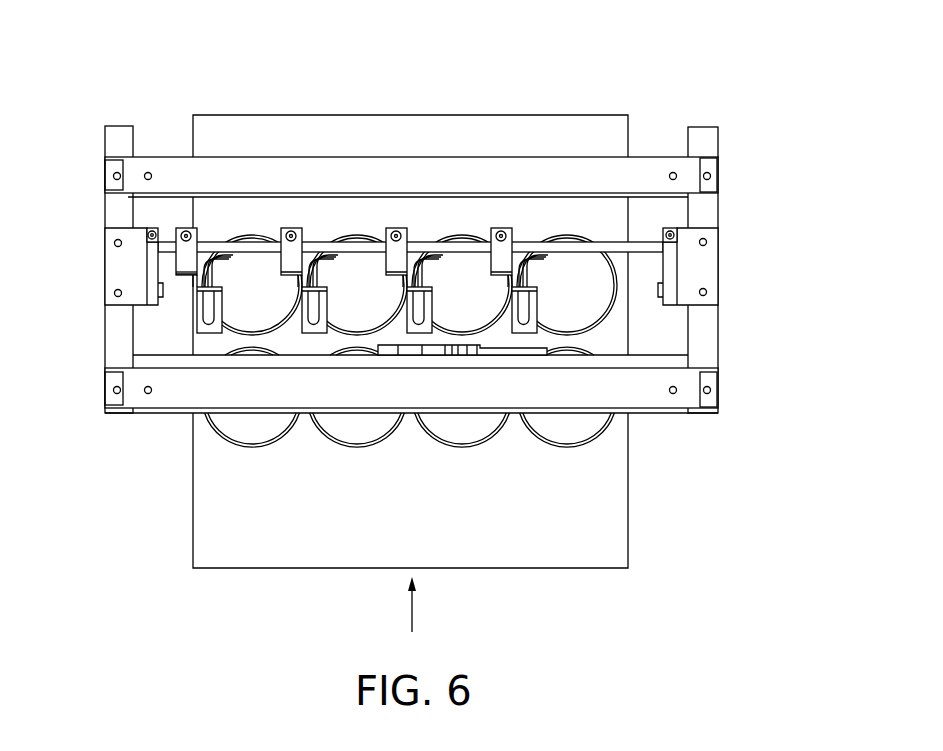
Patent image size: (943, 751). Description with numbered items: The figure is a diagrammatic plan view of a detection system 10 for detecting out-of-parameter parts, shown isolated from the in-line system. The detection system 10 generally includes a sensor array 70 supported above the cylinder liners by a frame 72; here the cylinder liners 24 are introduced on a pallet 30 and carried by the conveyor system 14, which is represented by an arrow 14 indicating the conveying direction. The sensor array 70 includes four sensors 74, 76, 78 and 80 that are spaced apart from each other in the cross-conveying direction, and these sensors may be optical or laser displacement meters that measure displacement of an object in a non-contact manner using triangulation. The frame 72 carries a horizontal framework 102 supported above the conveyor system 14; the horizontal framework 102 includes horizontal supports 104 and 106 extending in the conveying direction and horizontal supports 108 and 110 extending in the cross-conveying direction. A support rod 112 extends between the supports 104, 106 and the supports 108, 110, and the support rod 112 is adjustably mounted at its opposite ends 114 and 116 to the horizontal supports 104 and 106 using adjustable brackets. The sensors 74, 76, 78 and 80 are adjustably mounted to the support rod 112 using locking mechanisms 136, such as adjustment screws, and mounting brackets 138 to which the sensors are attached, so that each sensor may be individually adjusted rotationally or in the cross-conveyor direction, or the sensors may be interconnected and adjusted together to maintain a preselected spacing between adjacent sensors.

The detection system 10 is at (760, 110).
The conveyor system 14 is at (413, 607).
The cylinder liner 24 is at (363, 445).
The pallet 30 is at (592, 558).
The sensor array 70 is at (340, 200).
The frame 72 is at (110, 268).
The sensor 74 is at (222, 306).
The sensor 76 is at (327, 306).
The sensor 78 is at (432, 306).
The sensor 80 is at (537, 306).
The horizontal framework 102 is at (432, 140).
The horizontal support 104 is at (112, 212).
The horizontal support 106 is at (720, 352).
The horizontal support 108 is at (568, 170).
The horizontal support 110 is at (642, 402).
The support rod 112 is at (431, 252).
The end of support rod 114 is at (137, 215).
The end of support rod 116 is at (645, 221).
The locking mechanism 136 is at (186, 227).
The mounting bracket 138 is at (188, 274).